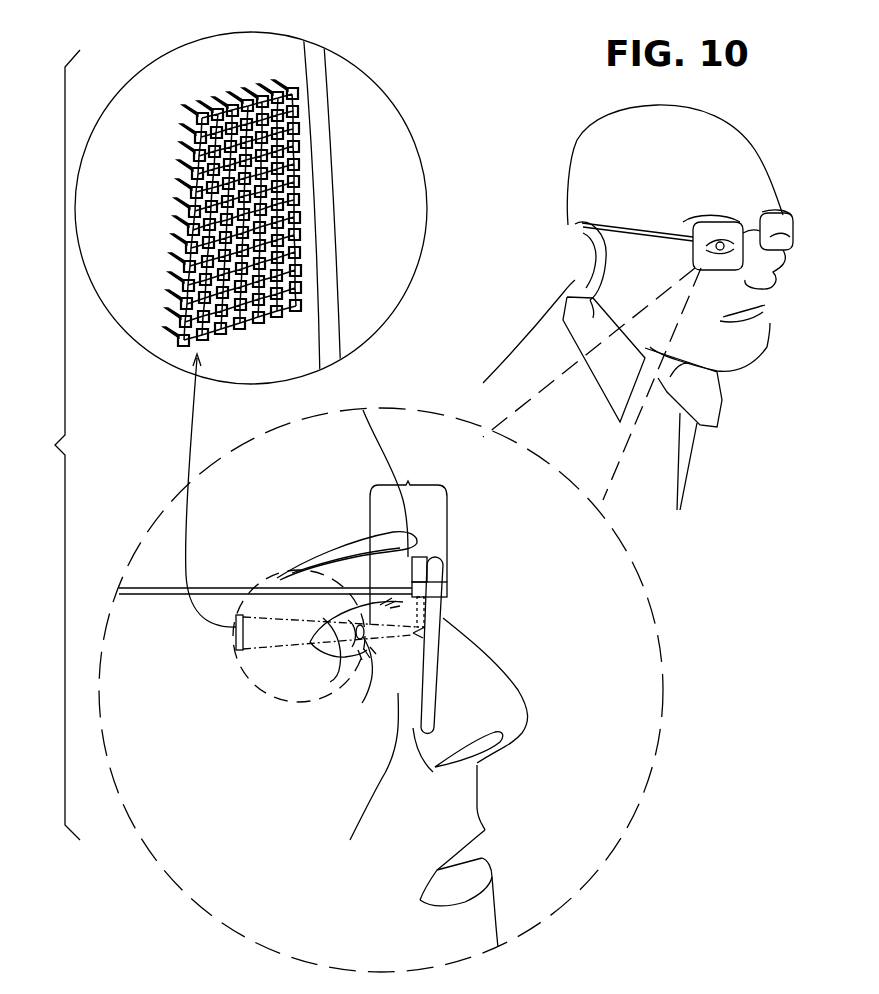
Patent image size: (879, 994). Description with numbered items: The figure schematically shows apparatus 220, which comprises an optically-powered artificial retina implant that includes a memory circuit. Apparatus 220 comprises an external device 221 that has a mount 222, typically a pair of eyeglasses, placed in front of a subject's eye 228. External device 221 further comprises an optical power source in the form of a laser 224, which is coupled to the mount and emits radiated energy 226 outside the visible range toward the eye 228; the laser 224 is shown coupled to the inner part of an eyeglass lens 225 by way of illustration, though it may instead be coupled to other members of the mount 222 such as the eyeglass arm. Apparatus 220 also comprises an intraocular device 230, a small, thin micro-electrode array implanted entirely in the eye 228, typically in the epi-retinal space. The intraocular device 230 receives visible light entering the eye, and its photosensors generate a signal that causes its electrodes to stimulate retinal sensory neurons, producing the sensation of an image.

The apparatus 220 is at (48, 445).
The external device 221 is at (790, 142).
The mount 222 is at (230, 588).
The laser 224 is at (426, 558).
The eyeglass lens 225 is at (433, 698).
The radiated energy 226 is at (432, 620).
The eye 228 is at (292, 697).
The intraocular device 230 is at (183, 88).